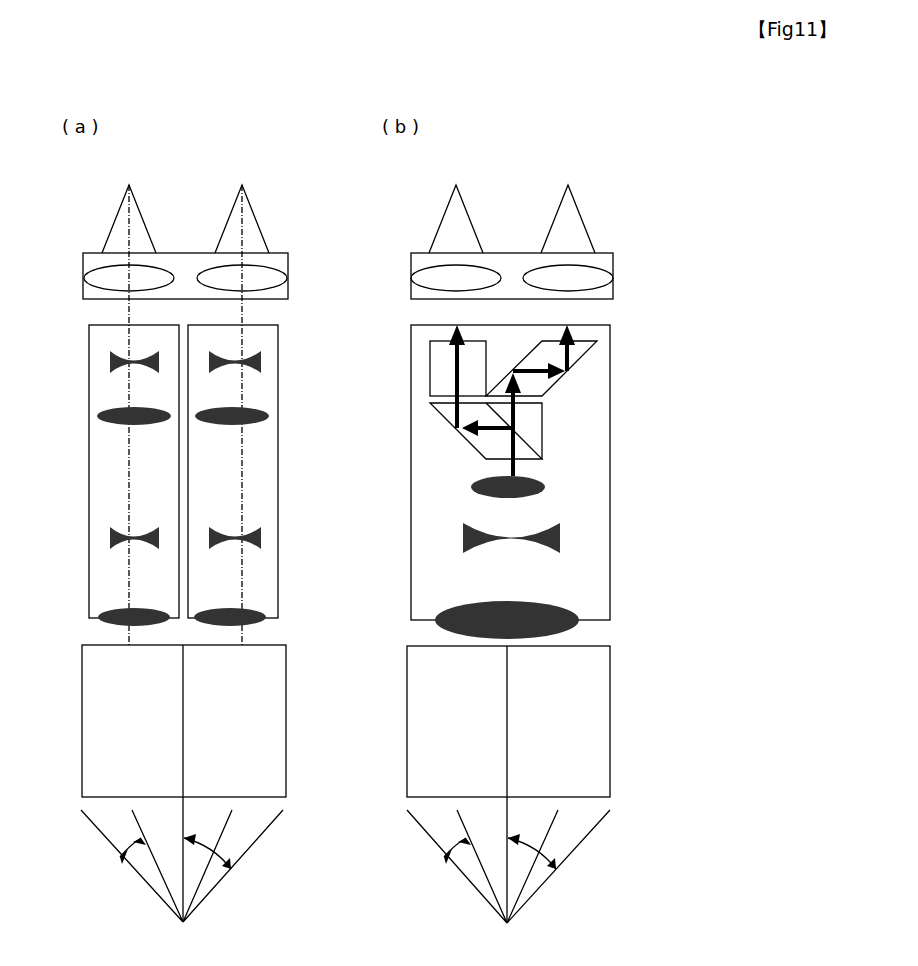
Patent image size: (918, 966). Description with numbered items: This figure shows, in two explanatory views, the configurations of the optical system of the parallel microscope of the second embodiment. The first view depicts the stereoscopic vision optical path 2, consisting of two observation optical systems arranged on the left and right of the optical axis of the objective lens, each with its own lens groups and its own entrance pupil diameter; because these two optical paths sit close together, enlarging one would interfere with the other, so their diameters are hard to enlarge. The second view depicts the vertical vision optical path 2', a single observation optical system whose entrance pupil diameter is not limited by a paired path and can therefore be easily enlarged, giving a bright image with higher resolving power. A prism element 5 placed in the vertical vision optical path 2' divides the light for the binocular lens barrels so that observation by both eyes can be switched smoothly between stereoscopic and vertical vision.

The observation optical system 2 is at (203, 439).
The vertical vision optical path 2' is at (522, 446).
The prism element 5 is at (440, 435).